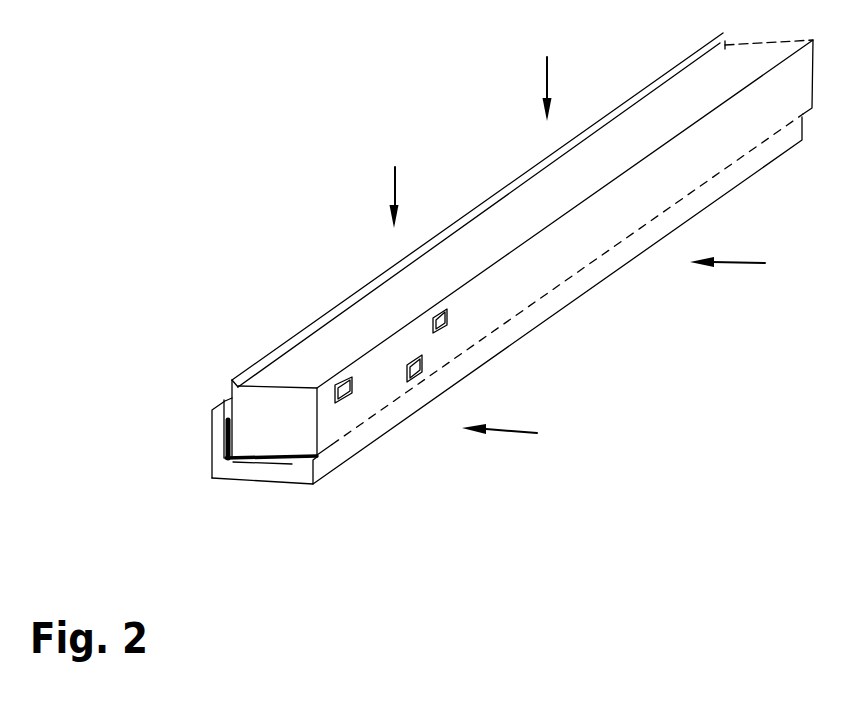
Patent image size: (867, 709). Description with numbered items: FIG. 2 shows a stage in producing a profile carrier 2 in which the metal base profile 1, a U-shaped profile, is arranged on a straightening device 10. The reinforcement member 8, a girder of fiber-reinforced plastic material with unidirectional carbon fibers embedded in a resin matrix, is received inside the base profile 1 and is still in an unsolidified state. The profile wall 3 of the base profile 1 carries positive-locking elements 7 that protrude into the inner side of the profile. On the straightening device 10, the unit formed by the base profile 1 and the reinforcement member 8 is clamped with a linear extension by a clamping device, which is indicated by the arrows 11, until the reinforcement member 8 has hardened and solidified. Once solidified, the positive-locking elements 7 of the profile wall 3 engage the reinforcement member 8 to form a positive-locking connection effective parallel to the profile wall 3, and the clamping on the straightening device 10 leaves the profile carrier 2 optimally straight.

The base profile 1 is at (245, 360).
The profile carrier 2 is at (314, 300).
The profile wall 3 is at (712, 178).
The positive-locking elements 7 is at (447, 322).
The reinforcement member 8 is at (273, 440).
The straightening device 10 is at (192, 461).
The arrows 11 is at (543, 83).